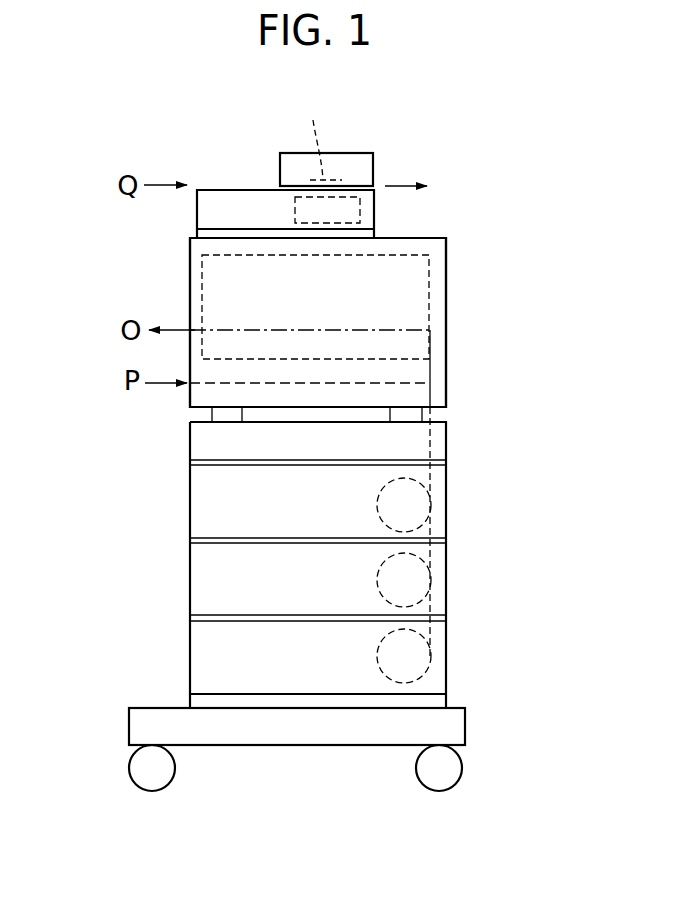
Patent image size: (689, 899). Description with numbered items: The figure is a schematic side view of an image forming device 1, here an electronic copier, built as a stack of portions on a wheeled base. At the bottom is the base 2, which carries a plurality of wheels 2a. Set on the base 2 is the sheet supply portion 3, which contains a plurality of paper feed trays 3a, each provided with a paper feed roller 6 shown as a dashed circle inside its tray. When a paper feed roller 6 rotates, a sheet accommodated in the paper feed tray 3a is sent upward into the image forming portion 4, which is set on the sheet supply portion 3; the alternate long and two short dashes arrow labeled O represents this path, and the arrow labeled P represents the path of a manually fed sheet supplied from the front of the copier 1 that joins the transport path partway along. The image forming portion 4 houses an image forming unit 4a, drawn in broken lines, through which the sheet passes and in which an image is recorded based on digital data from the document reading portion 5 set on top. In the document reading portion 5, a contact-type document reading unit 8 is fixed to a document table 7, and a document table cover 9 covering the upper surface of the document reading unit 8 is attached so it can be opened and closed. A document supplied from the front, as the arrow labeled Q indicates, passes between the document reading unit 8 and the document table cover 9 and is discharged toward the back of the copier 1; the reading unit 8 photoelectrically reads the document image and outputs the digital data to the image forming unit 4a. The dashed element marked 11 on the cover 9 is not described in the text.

The image forming device 1 is at (165, 440).
The base 2 is at (283, 740).
The wheels 2a is at (140, 768).
The sheet supply portion 3 is at (186, 545).
The paper feed trays 3a is at (222, 492).
The image forming portion 4 is at (186, 290).
The image forming unit 4a is at (420, 291).
The document reading portion 5 is at (266, 181).
The paper feed rollers 6 is at (380, 507).
The document table 7 is at (213, 213).
The document reading unit 8 is at (353, 208).
The document table cover 9 is at (348, 160).
The document conveying path 11 is at (318, 134).